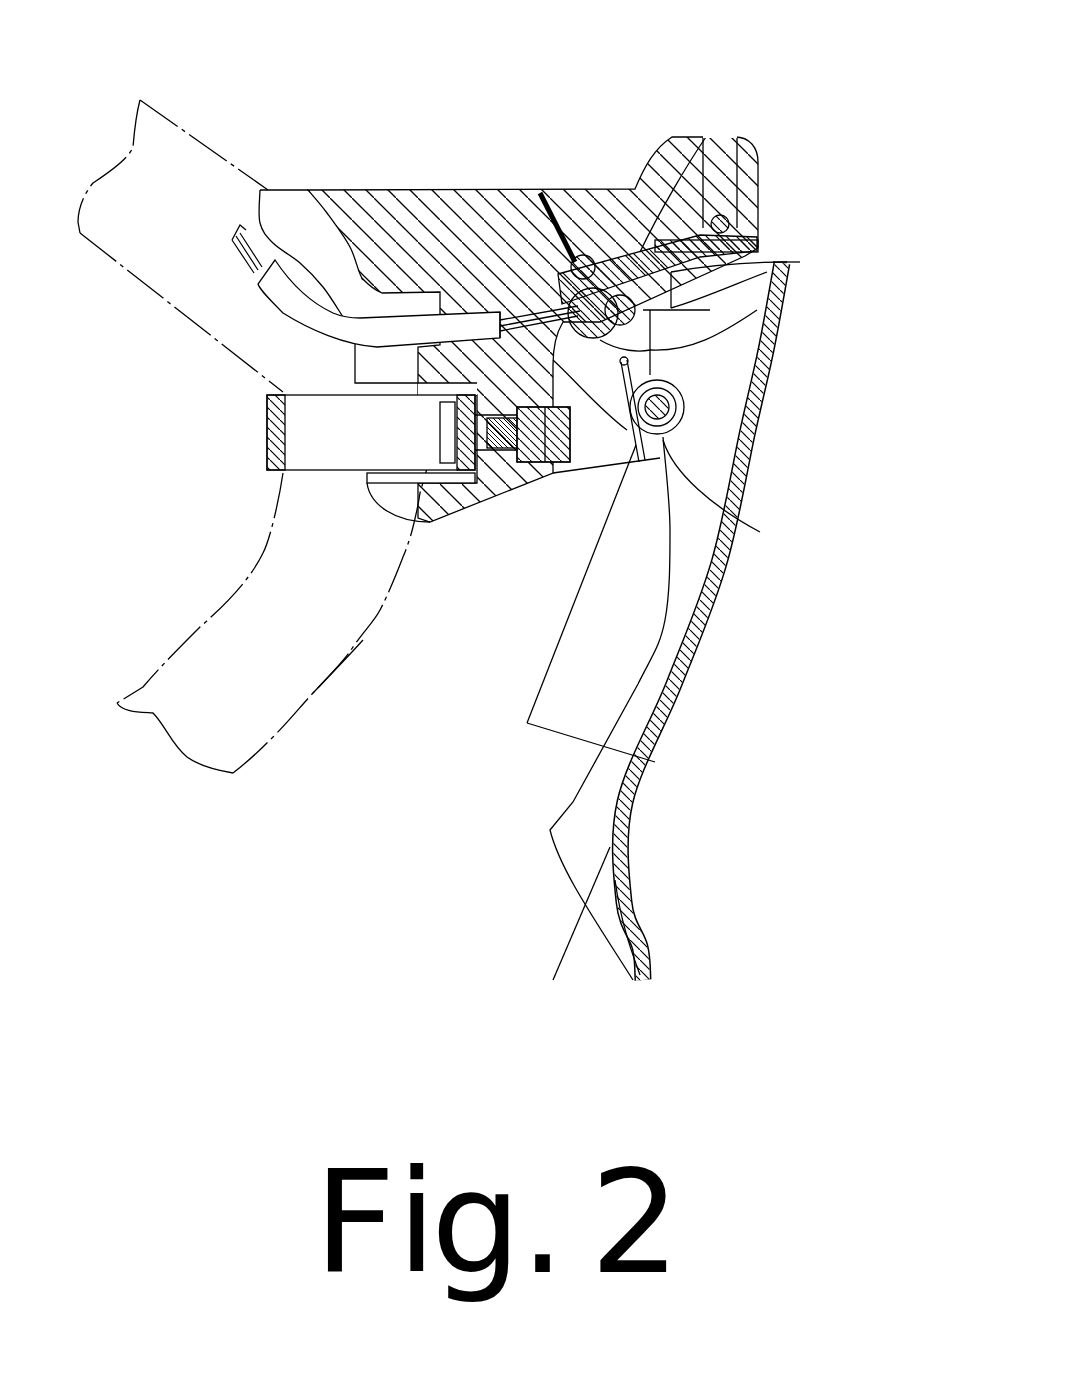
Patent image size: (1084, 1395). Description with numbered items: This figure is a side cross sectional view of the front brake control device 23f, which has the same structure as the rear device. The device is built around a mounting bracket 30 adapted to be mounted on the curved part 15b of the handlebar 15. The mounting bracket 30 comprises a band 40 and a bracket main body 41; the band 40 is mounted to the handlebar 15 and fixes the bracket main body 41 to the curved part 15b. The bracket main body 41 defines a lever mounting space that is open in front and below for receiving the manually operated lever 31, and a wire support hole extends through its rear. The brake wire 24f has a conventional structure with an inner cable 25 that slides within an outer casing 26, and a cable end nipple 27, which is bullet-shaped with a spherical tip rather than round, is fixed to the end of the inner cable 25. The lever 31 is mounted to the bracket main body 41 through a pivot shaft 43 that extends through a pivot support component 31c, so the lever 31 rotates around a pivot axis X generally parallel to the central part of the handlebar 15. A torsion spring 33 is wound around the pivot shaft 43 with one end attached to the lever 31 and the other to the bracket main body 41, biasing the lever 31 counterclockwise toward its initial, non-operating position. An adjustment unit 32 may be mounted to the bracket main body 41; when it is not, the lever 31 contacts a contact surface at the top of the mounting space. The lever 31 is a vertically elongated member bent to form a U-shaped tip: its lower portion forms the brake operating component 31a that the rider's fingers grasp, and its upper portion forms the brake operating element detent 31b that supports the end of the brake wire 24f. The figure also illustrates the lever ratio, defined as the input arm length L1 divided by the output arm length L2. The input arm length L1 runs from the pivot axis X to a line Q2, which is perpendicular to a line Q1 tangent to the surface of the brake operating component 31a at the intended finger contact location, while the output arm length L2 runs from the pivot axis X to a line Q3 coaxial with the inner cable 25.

The handlebar 15 is at (205, 128).
The curved part of handlebar 15b is at (360, 643).
The front brake control device 23f is at (568, 103).
The brake wire 24f is at (360, 305).
The inner cable 25 is at (550, 192).
The outer casing 26 is at (428, 327).
The cable end nipple 27 is at (632, 285).
The mounting bracket 30 is at (467, 200).
The manually operated lever 31 is at (758, 432).
The brake operating component 31a is at (647, 758).
The brake operating element detent 31b is at (772, 316).
The pivot support component 31c is at (687, 440).
The adjustment unit 32 is at (758, 237).
The torsion spring 33 is at (600, 437).
The band 40 is at (307, 463).
The bracket main body 41 is at (490, 485).
The pivot shaft 43 is at (684, 398).
The input arm length L1 is at (535, 640).
The output arm length L2 is at (790, 262).
The tangent line Q1 is at (563, 963).
The perpendicular line Q2 is at (560, 743).
The cable axis line Q3 is at (722, 215).
The pivot axis X is at (760, 532).